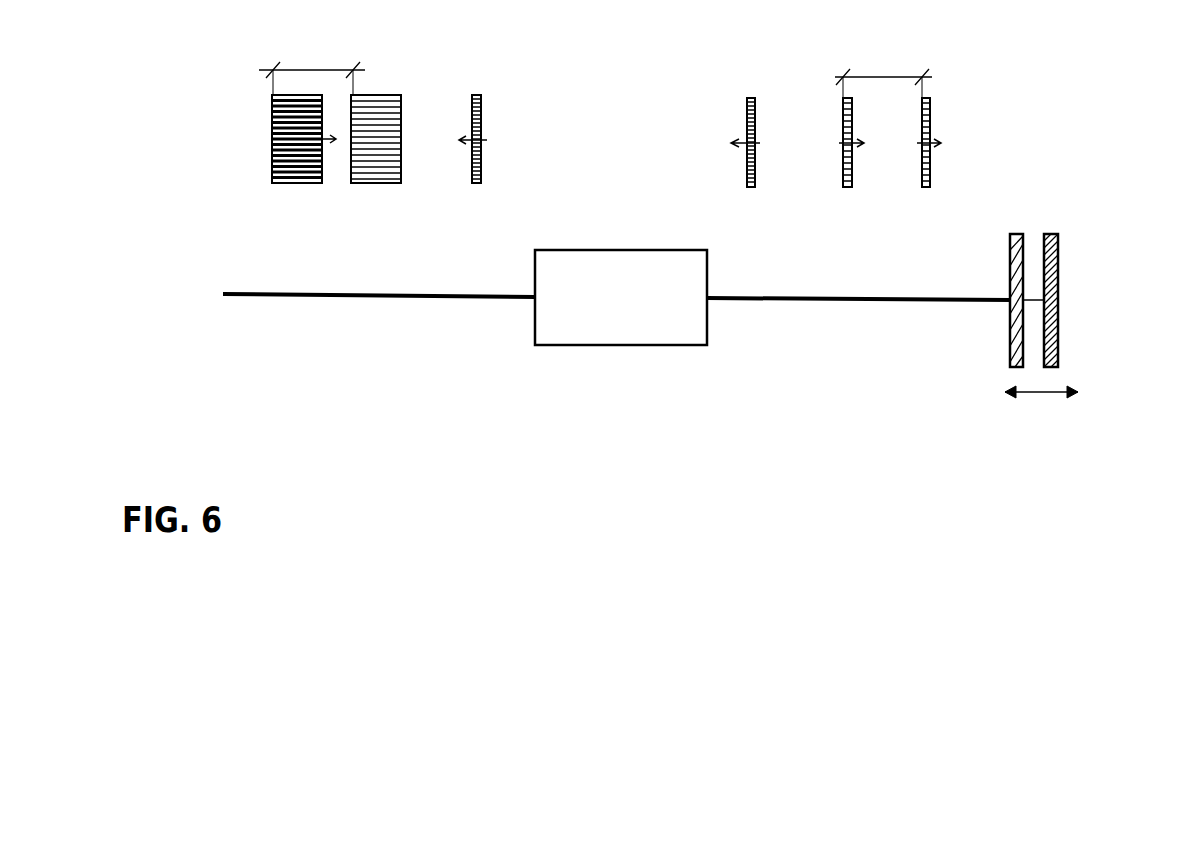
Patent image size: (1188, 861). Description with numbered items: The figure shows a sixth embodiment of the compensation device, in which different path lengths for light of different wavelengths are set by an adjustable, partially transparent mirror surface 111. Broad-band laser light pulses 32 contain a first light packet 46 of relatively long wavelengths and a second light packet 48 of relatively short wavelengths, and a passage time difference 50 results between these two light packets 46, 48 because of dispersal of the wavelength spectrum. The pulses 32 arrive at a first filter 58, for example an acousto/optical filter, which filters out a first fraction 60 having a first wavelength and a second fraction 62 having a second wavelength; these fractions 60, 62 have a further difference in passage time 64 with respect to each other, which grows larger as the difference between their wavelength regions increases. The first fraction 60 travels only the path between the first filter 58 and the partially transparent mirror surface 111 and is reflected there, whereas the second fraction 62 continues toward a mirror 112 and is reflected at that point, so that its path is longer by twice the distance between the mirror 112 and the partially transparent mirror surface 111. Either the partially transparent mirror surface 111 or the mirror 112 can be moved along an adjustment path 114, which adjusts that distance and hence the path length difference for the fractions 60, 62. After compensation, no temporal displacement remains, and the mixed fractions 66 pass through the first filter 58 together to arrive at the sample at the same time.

The broad-band laser light pulses 32 is at (318, 297).
The first light packet 46 is at (272, 112).
The second light packet 48 is at (401, 111).
The passage time difference 50 is at (309, 70).
The first filter 58 is at (611, 346).
The first fraction 60 is at (843, 110).
The second fraction 62 is at (930, 120).
The further difference in passage time 64 is at (893, 77).
The mixed fractions 66 is at (481, 108).
The partially transparent mirror surface 111 is at (1010, 345).
The mirror 112 is at (1058, 271).
The adjustment path 114 is at (1042, 395).